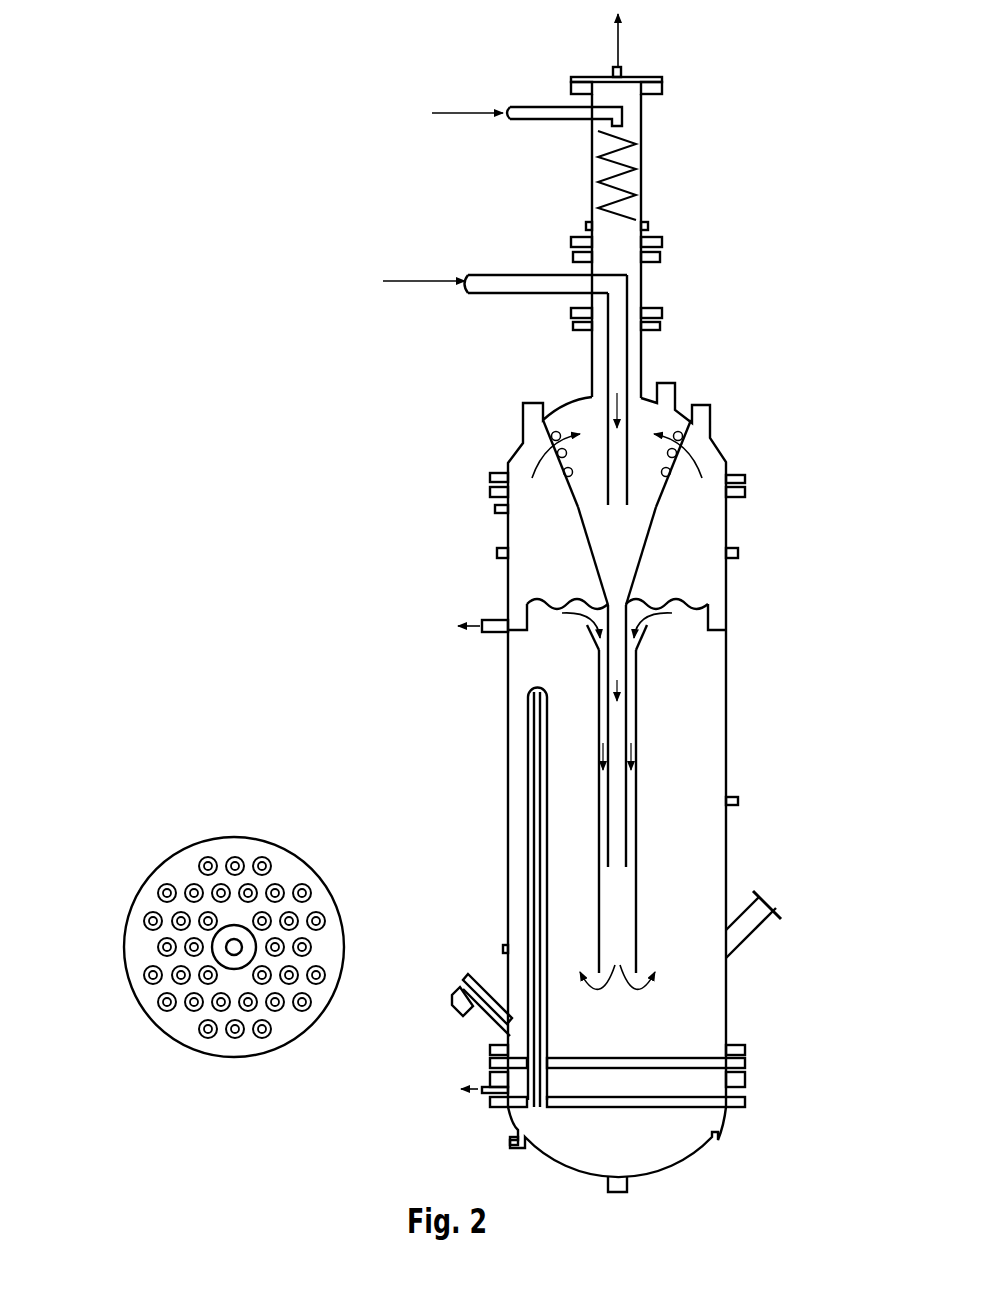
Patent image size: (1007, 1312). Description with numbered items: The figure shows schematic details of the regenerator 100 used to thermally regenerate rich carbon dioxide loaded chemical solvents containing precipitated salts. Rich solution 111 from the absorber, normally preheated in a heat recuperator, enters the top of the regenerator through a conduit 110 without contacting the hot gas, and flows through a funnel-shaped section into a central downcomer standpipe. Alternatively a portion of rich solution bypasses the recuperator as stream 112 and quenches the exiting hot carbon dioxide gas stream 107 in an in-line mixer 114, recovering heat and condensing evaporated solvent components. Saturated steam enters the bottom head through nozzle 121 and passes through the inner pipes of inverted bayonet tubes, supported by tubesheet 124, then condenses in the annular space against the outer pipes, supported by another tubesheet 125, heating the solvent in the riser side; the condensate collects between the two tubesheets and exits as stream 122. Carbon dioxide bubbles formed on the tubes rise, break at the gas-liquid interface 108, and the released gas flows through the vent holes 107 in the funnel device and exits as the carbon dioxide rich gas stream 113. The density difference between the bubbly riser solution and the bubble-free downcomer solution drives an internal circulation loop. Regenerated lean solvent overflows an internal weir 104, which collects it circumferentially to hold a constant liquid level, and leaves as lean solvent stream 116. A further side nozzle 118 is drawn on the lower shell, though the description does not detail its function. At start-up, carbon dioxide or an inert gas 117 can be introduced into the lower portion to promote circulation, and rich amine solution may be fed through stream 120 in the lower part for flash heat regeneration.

The regenerator 100 is at (527, 603).
The internal weir 104 is at (523, 618).
The vent holes 107 is at (677, 452).
The gas-liquid interface 108 is at (647, 597).
The conduit 110 is at (628, 373).
The rich solution stream 111 is at (423, 280).
The rich solution bypass stream 112 is at (470, 113).
The CO2 rich gas stream 113 is at (618, 42).
The in-line mixer 114 is at (620, 158).
The lean solvent stream 116 is at (473, 633).
The inert gas 117 is at (459, 979).
The side outlet nozzle 118 is at (760, 930).
The rich amine solution stream 120 is at (454, 1009).
The steam nozzle 121 is at (506, 1140).
The condensate stream 122 is at (475, 1091).
The tubesheet 124 is at (688, 1107).
The tubesheet 125 is at (673, 1068).